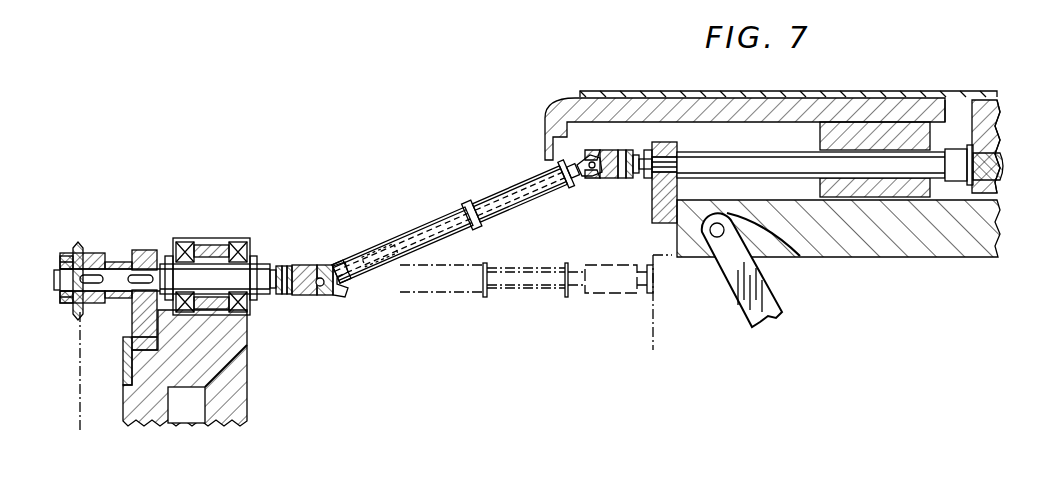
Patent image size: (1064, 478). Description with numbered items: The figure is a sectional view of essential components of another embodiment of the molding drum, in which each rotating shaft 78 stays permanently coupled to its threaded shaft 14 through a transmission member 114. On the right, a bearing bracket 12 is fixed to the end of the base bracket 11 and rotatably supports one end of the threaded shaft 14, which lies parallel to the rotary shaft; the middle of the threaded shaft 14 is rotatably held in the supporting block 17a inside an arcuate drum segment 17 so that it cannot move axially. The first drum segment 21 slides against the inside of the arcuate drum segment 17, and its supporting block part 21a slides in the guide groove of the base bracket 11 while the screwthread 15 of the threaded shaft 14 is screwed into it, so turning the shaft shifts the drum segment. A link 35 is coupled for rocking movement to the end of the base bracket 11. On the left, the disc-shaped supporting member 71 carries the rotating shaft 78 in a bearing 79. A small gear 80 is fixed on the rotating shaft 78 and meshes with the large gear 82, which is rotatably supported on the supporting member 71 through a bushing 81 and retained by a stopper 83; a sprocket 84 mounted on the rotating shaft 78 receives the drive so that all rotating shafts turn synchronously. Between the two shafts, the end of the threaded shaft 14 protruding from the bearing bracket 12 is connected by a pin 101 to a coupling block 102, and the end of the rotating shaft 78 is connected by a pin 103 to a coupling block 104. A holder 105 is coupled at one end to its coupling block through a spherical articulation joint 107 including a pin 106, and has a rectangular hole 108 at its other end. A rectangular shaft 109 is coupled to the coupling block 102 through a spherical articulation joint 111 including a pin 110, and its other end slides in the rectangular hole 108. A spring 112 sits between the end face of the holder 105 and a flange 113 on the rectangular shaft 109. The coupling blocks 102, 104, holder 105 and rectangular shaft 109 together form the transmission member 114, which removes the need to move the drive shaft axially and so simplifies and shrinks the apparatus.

The base bracket 11 is at (866, 257).
The bearing bracket 12 is at (662, 147).
The threaded shaft 14 is at (958, 150).
The screwthread 15 is at (720, 152).
The arcuate drum segment 17 is at (950, 92).
The supporting block 17a is at (1000, 128).
The first drum segment 21 is at (792, 100).
The supporting block part 21a is at (820, 135).
The link 35 is at (768, 300).
The supporting member 71 is at (215, 358).
The rotating shaft 78 is at (211, 276).
The bearing 79 is at (252, 258).
The small gear 80 is at (140, 256).
The bushing 81 is at (147, 351).
The large gear 82 is at (132, 330).
The stopper 83 is at (123, 354).
The sprocket 84 is at (90, 258).
The pin 101 is at (640, 180).
The coupling block 102 is at (614, 180).
The pin 103 is at (282, 295).
The coupling block 104 is at (312, 265).
The holder 105 is at (346, 250).
The pin 106 is at (324, 296).
The spherical articulation joint 107 is at (343, 294).
The rectangular hole 108 is at (395, 228).
The rectangular shaft 109 is at (512, 178).
The pin 110 is at (604, 150).
The spherical articulation joint 111 is at (580, 162).
The spring 112 is at (555, 201).
The flange 113 is at (580, 198).
The transmission member 114 is at (442, 195).